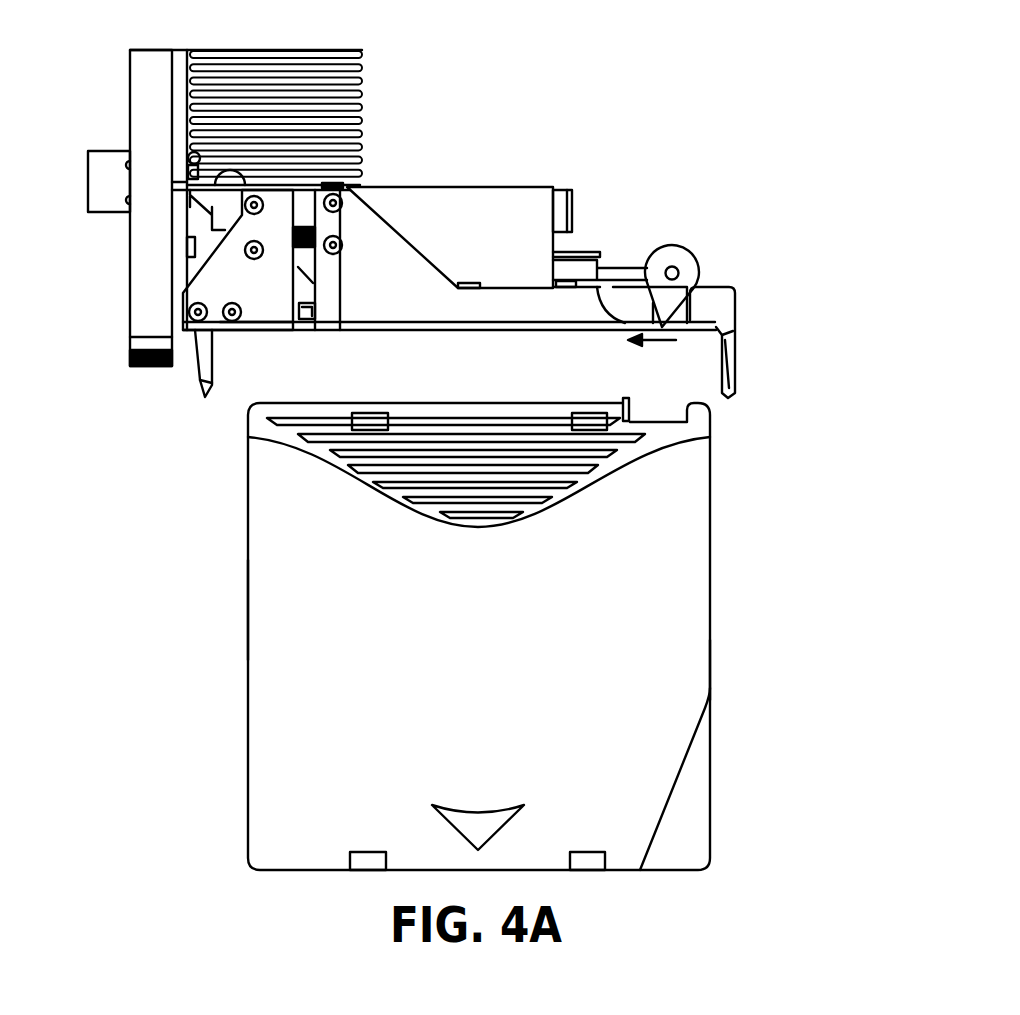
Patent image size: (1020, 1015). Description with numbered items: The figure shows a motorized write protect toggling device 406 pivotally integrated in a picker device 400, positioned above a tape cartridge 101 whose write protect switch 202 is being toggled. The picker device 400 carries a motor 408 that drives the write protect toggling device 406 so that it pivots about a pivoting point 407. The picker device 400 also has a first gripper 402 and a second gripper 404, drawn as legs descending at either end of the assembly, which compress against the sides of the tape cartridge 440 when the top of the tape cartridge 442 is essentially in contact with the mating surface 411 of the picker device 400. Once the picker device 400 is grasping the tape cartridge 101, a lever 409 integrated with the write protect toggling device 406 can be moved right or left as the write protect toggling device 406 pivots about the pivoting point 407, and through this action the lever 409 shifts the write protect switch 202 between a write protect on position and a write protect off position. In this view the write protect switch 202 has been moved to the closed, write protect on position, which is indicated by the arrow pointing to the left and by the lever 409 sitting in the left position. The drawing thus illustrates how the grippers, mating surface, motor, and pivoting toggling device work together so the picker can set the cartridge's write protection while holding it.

The picker device 400 is at (474, 238).
The motor 408 is at (457, 185).
The lever 409 is at (660, 308).
The write protect toggling device 406 is at (752, 236).
The pivoting point 407 is at (696, 272).
The first gripper 402 is at (735, 365).
The second gripper 404 is at (195, 372).
The mating surface 411 is at (482, 334).
The write protect switch 202 is at (642, 403).
The tape cartridge 101 is at (502, 612).
The top of the tape cartridge 442 is at (473, 403).
The sides of the tape cartridge 440 is at (248, 610).